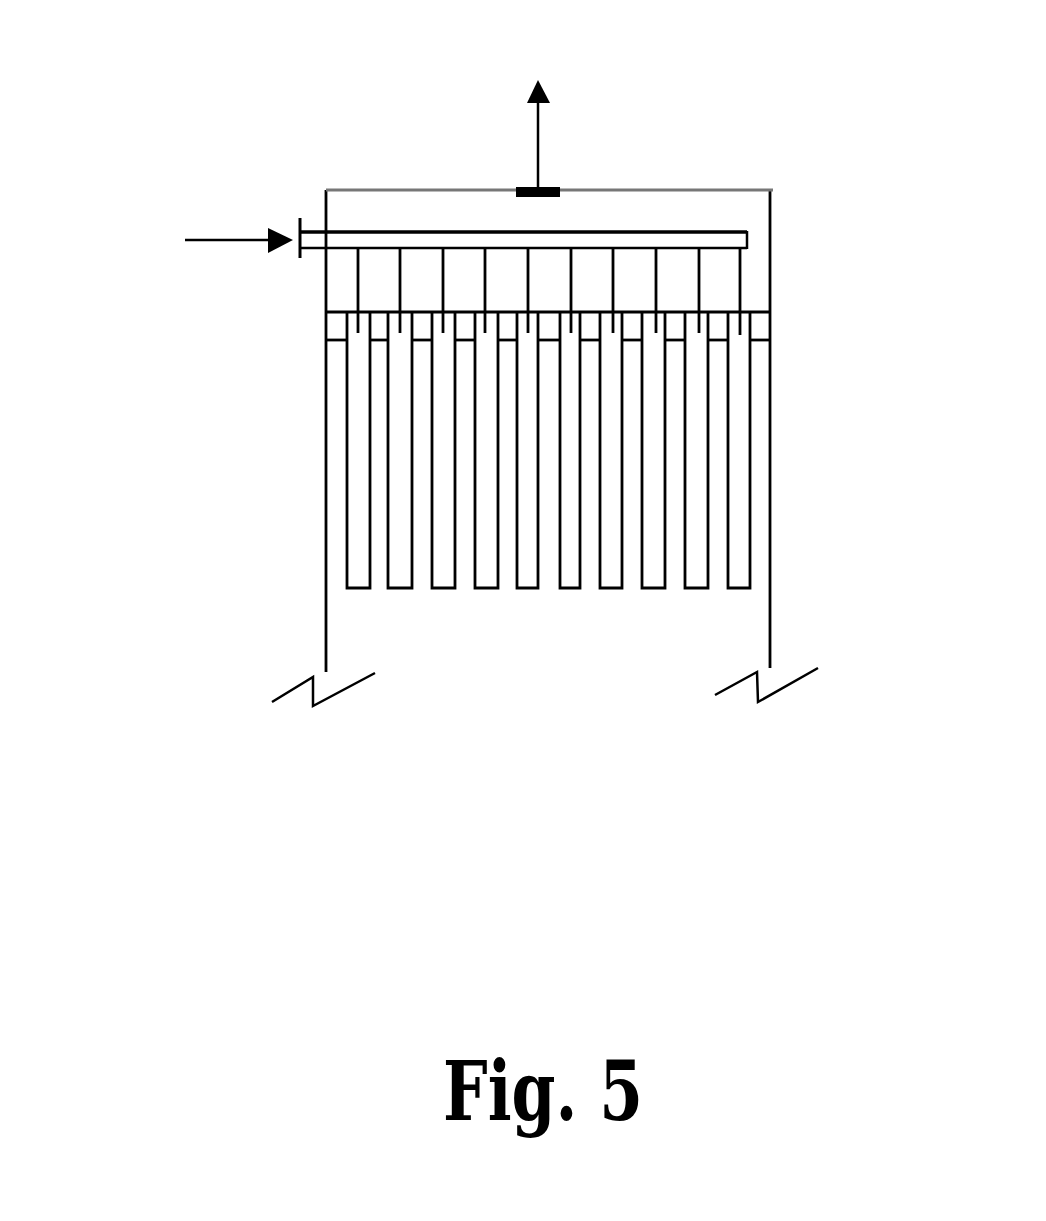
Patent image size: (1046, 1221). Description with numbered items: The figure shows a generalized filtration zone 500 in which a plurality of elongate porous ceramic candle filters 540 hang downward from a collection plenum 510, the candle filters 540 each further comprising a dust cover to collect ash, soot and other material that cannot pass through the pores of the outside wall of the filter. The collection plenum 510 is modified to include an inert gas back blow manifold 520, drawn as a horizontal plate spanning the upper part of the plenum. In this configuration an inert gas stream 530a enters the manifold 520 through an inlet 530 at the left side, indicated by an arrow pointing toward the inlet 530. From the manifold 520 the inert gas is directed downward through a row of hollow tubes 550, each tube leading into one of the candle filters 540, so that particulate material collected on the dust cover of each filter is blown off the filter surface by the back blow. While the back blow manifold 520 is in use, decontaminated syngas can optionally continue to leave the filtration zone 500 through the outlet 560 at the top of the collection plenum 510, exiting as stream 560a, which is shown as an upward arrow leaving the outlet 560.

The filtration zone 500 is at (510, 360).
The collection plenum 510 is at (753, 210).
The inert gas back blow manifold 520 is at (402, 240).
The inlet 530 is at (298, 233).
The inert gas stream 530a is at (186, 242).
The candle filters 540 is at (738, 460).
The hollow tubes 550 is at (738, 287).
The outlet 560 is at (560, 190).
The stream 560a is at (547, 100).